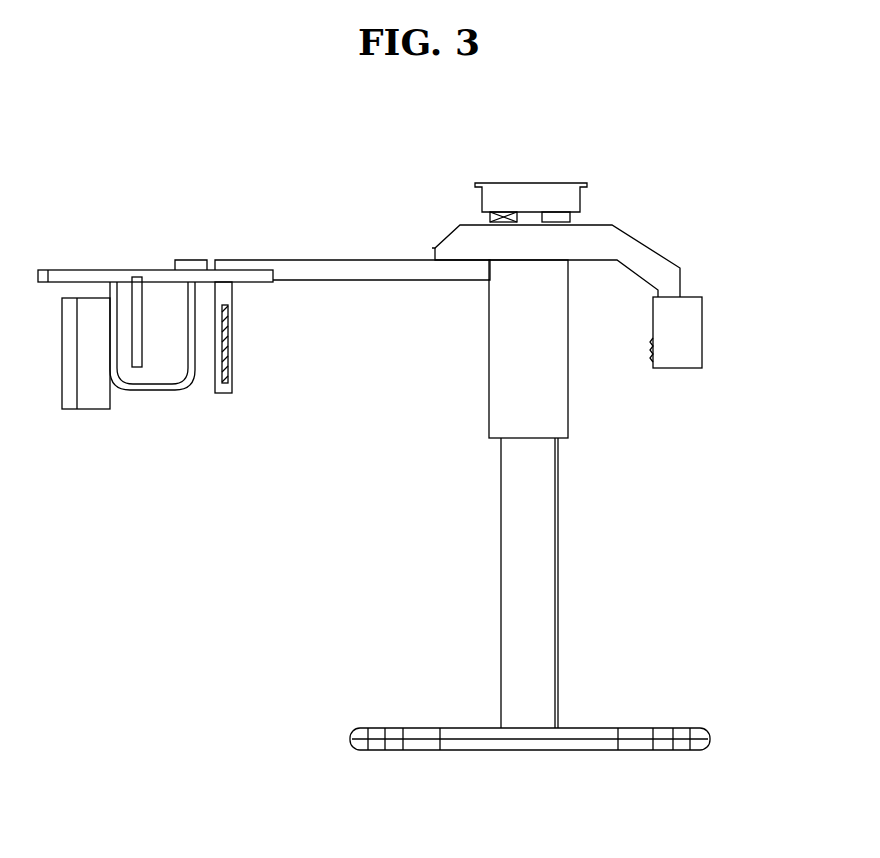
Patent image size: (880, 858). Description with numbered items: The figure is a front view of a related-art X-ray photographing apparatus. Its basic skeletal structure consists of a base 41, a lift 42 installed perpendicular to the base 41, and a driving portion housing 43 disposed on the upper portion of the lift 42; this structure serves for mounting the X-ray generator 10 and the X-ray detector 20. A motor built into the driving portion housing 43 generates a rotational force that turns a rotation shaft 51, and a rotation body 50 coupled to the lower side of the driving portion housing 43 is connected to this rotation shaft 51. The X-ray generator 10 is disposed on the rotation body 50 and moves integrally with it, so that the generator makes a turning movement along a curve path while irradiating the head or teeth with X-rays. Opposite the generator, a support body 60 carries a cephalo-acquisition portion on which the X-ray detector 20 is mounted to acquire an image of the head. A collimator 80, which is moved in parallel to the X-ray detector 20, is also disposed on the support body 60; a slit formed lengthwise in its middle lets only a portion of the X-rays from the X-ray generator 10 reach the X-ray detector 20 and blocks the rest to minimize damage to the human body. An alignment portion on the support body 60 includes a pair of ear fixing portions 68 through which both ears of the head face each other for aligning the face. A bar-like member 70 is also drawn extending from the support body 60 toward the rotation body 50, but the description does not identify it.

The X-ray generator 10 is at (690, 330).
The X-ray detector 20 is at (68, 400).
The base 41 is at (468, 742).
The lift 42 is at (543, 543).
The driving portion housing 43 is at (548, 198).
The rotation body 50 is at (637, 255).
The rotation shaft 51 is at (490, 219).
The support body 60 is at (87, 279).
The ear fixing portions 68 is at (150, 391).
The upper support bar 70 is at (329, 265).
The collimator 80 is at (233, 373).